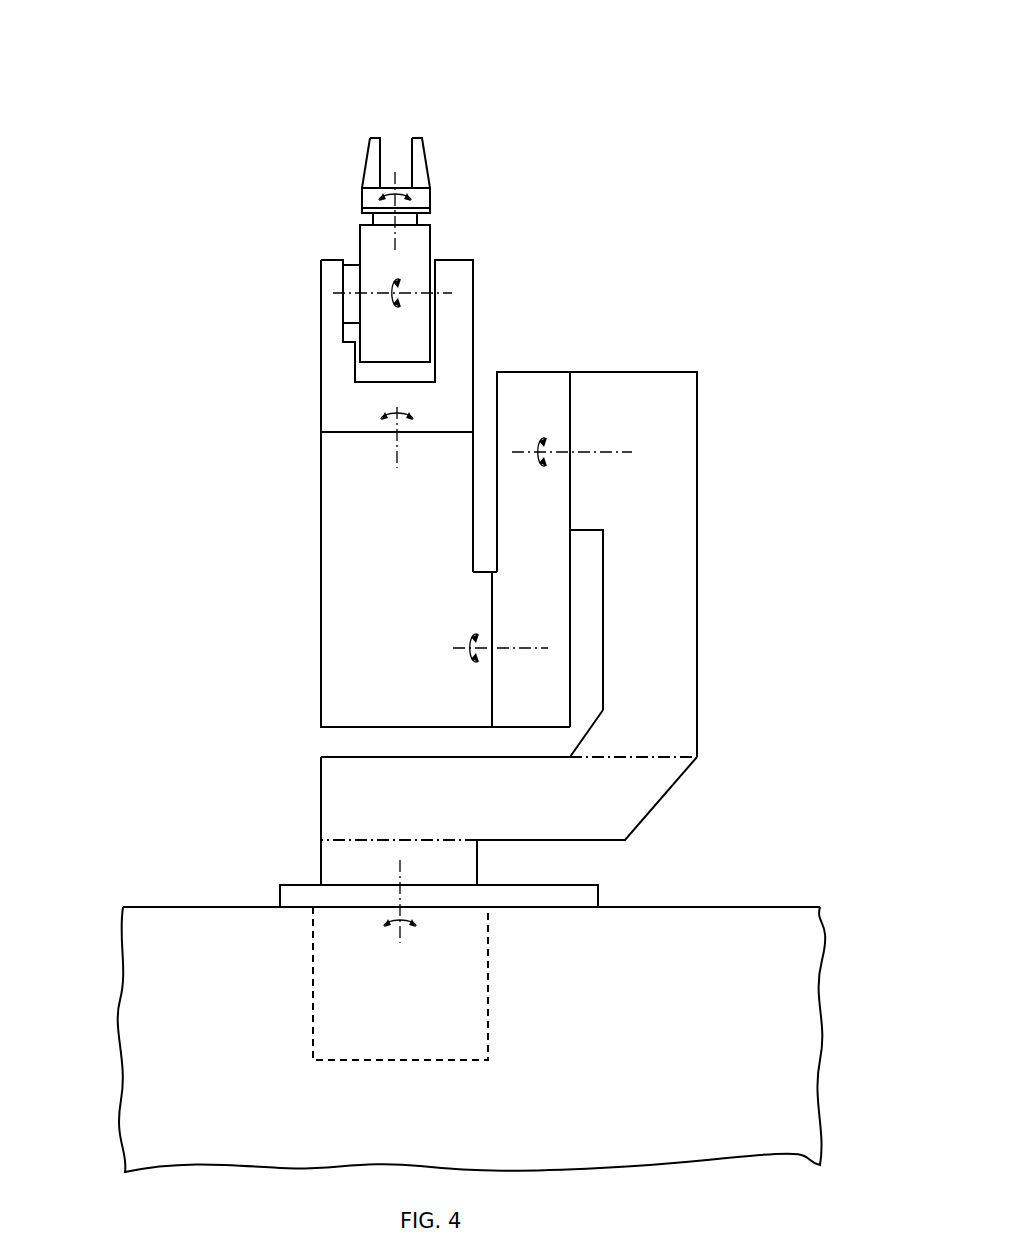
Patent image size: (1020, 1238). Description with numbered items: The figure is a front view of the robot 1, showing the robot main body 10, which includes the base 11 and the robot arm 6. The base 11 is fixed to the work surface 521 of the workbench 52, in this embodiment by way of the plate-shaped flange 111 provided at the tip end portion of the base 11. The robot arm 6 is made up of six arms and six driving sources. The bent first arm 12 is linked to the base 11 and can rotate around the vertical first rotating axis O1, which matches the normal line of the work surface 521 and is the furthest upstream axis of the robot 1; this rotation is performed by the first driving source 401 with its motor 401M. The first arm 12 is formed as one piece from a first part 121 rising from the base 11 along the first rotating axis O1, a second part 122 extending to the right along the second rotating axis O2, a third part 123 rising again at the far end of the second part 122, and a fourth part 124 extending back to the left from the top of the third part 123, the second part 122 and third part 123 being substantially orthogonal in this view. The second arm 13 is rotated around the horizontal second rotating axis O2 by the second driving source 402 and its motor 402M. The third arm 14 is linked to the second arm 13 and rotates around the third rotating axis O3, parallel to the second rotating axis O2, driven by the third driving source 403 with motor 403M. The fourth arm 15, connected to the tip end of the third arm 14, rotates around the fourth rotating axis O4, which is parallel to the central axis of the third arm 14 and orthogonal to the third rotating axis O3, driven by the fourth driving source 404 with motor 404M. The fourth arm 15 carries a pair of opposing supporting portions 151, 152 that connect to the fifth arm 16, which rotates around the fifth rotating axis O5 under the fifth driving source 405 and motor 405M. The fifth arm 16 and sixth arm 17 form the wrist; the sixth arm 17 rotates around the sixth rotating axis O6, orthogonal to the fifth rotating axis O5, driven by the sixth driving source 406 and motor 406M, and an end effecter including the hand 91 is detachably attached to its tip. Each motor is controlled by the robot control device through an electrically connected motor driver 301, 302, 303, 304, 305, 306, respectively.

The robot 1 is at (655, 92).
The robot main body 10 is at (650, 163).
The hand 91 is at (356, 167).
The sixth arm 17 is at (360, 210).
The fifth arm 16 is at (430, 248).
The sixth rotating axis O6 is at (395, 228).
The fourth arm 15 is at (416, 491).
The supporting portion 151 is at (455, 313).
The supporting portion 152 is at (332, 340).
The fifth rotating axis O5 is at (383, 302).
The motor 406M is at (281, 285).
The sixth driving source 406 is at (281, 285).
The motor 405M is at (261, 420).
The fifth driving source 405 is at (261, 420).
The fourth rotating axis O4 is at (388, 405).
The third arm 14 is at (321, 705).
The motor 404M is at (316, 489).
The fourth driving source 404 is at (393, 532).
The motor 403M is at (339, 638).
The third driving source 403 is at (339, 638).
The third rotating axis O3 is at (453, 650).
The second arm 13 is at (651, 523).
The motor 402M is at (641, 396).
The second driving source 402 is at (641, 396).
The second rotating axis O2 is at (613, 452).
The robot arm 6 is at (697, 557).
The first arm 12 is at (583, 792).
The first part 121 is at (455, 862).
The second part 122 is at (642, 793).
The third part 123 is at (670, 713).
The fourth part 124 is at (590, 500).
The motor 401M is at (308, 867).
The first driving source 401 is at (308, 867).
The first rotating axis O1 is at (398, 895).
The base 11 is at (397, 873).
The flange 111 is at (296, 886).
The workbench 52 is at (442, 996).
The work surface 521 is at (157, 907).
The motor driver 301 is at (448, 975).
The motor driver 302 is at (476, 983).
The motor driver 303 is at (476, 983).
The motor driver 304 is at (476, 994).
The motor driver 305 is at (476, 1007).
The motor driver 306 is at (476, 1019).